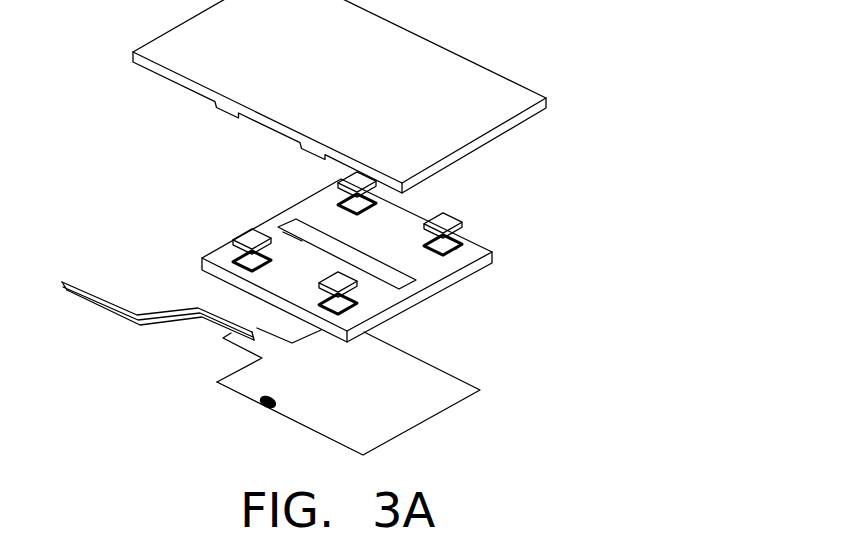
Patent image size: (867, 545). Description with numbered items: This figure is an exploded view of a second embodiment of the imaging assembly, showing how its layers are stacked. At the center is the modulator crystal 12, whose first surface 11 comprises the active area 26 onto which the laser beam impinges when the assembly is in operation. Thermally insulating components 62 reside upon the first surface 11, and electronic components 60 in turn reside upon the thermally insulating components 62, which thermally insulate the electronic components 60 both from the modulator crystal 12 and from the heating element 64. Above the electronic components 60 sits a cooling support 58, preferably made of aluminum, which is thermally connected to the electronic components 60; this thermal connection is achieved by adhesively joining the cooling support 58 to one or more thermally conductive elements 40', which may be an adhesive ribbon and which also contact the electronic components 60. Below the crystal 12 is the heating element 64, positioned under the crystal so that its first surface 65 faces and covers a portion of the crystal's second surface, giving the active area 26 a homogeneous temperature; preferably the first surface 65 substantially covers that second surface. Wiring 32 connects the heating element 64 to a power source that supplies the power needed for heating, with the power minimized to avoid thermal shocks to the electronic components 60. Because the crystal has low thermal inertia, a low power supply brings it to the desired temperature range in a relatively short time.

The cooling support 58 is at (402, 55).
The modulator crystal 12 is at (318, 205).
The active area 26 is at (272, 224).
The thermally conductive elements 40' is at (484, 201).
The electronic components 60 is at (450, 247).
The thermally insulating components 62 is at (448, 252).
The first surface 11 is at (428, 267).
The wiring 32 is at (115, 313).
The heating element 64 is at (262, 408).
The first surface of heating element 65 is at (420, 400).